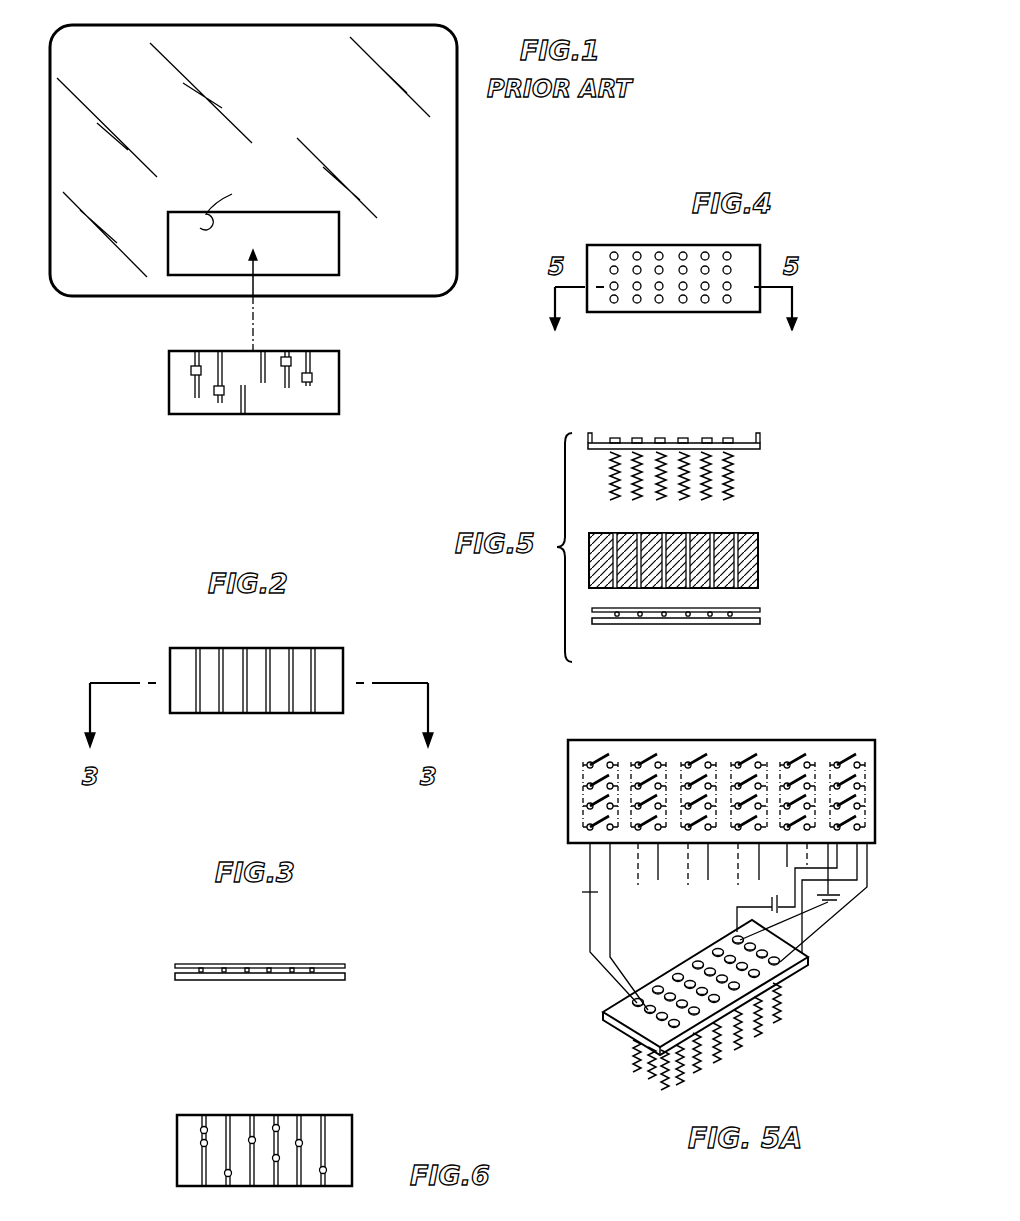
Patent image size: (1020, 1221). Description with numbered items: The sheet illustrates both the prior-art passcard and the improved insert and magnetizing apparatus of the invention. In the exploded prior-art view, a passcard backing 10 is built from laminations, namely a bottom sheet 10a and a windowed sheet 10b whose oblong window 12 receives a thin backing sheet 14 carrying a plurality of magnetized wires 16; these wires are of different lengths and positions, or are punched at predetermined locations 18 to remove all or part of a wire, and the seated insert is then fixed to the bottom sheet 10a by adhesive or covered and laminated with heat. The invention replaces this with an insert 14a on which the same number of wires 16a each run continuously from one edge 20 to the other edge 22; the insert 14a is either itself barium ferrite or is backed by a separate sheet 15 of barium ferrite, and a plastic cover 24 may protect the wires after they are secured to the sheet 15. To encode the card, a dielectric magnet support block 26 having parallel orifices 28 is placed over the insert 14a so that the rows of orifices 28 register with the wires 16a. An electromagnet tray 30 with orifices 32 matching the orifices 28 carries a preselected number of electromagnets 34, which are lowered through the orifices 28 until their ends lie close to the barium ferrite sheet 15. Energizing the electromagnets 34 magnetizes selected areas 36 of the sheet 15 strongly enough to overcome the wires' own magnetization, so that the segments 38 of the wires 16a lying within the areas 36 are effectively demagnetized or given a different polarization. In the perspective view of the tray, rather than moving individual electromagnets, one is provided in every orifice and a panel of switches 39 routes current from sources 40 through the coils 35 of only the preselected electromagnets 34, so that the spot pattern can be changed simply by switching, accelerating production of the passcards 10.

In FIG. 1, the passcard backing 10 is at (279, 153).
In FIG. 1, the bottom sheet 10a is at (231, 202).
In FIG. 1, the windowed sheet 10b is at (383, 170).
In FIG. 1, the window 12 is at (340, 228).
In FIG. 1, the backing sheet 14 is at (170, 387).
In FIG. 5, the insert 14a is at (760, 612).
In FIG. 2, the insert 14a is at (170, 713).
In FIG. 3, the insert 14a is at (241, 975).
In FIG. 6, the insert 14a is at (177, 1147).
In FIG. 5, the sheet of barium ferrite 15 is at (742, 624).
In FIG. 3, the sheet of barium ferrite 15 is at (336, 980).
In FIG. 1, the magnetized wires 16 is at (303, 387).
In FIG. 5, the wires 16a is at (687, 618).
In FIG. 2, the wires 16a is at (220, 657).
In FIG. 3, the wires 16a is at (270, 969).
In FIG. 6, the wires 16a is at (317, 1137).
In FIG. 1, the predetermined locations 18 is at (310, 372).
In FIG. 2, the edge 20 is at (258, 648).
In FIG. 2, the other edge 22 is at (257, 713).
In FIG. 5, the plastic cover 24 is at (666, 641).
In FIG. 3, the plastic cover 24 is at (213, 964).
In FIG. 4, the magnet support block 26 is at (746, 257).
In FIG. 5, the magnet support block 26 is at (697, 542).
In FIG. 4, the orifices 28 is at (727, 303).
In FIG. 5, the orifices 28 is at (736, 543).
In FIG. 5, the electromagnet tray 30 is at (741, 443).
In FIG. 5, the orifices 32 is at (635, 460).
In FIG. 5A, the orifices 32 is at (707, 1036).
In FIG. 5, the electromagnets 34 is at (710, 490).
In FIG. 5A, the electromagnets 34 is at (697, 963).
In FIG. 5A, the coils 35 is at (686, 994).
In FIG. 6, the magnetized areas 36 is at (276, 1129).
In FIG. 6, the segments 38 is at (199, 1128).
In FIG. 5A, the segments 38 is at (683, 768).
In FIG. 5A, the switches 39 is at (852, 757).
In FIG. 5A, the current sources 40 is at (590, 892).